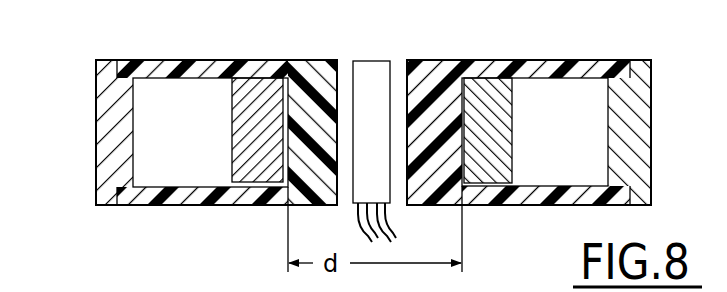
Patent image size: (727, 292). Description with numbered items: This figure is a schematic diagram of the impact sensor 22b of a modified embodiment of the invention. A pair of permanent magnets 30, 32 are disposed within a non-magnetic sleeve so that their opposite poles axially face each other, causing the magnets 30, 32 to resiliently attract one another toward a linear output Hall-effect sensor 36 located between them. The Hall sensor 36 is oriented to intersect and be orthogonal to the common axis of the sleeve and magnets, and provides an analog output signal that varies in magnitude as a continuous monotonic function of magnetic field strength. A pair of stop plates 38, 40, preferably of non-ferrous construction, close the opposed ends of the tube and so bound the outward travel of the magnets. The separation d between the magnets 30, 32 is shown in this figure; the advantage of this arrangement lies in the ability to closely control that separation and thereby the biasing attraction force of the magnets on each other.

The impact sensor 22b is at (585, 58).
The permanent magnet 30 is at (263, 81).
The permanent magnet 32 is at (475, 81).
The linear output Hall-effect sensor 36 is at (372, 63).
The stop plate 38 is at (101, 121).
The stop plate 40 is at (641, 108).